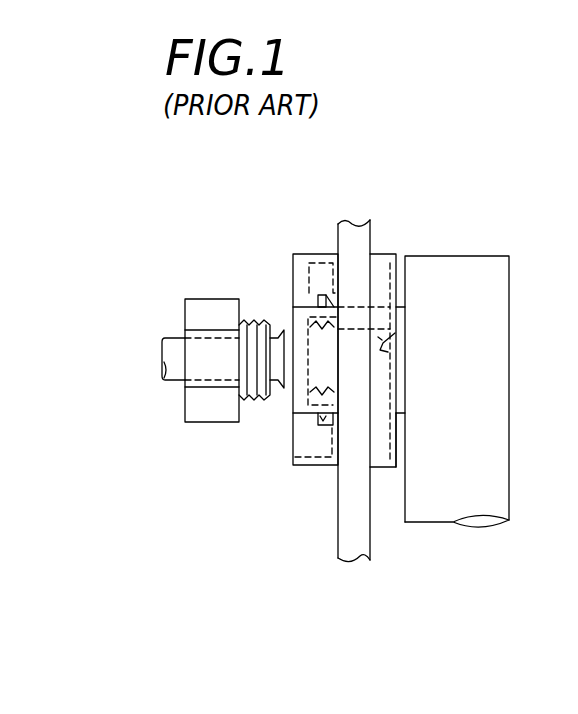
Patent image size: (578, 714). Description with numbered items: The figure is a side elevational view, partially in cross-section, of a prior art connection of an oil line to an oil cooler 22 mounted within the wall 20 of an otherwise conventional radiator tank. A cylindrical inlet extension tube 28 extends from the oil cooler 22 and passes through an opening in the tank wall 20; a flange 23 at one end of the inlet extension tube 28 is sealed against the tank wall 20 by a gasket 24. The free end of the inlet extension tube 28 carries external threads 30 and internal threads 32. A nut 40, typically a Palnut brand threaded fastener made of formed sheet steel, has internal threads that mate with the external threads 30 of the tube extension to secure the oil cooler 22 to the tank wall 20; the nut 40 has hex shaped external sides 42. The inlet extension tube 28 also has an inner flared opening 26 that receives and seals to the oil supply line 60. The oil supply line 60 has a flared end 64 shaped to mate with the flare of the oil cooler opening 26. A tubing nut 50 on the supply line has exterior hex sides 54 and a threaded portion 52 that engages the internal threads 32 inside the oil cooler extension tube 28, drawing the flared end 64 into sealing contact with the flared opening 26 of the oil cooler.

The wall 20 is at (353, 233).
The oil cooler 22 is at (482, 275).
The flange 23 is at (395, 443).
The gasket 24 is at (374, 256).
The inner flared opening 26 is at (395, 360).
The inlet extension tube 28 is at (352, 405).
The external threads 30 is at (332, 302).
The internal threads 32 is at (268, 390).
The nut 40 is at (272, 259).
The hex shaped external sides 42 is at (303, 442).
The tubing nut 50 is at (174, 272).
The threaded portion 52 is at (250, 415).
The exterior hex sides 54 is at (203, 312).
The oil supply line 60 is at (177, 378).
The flared end 64 is at (277, 335).